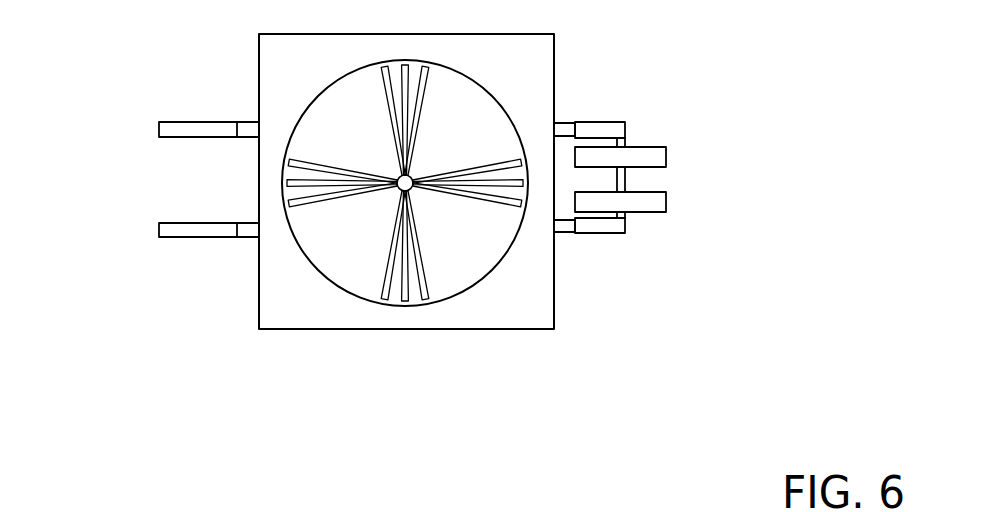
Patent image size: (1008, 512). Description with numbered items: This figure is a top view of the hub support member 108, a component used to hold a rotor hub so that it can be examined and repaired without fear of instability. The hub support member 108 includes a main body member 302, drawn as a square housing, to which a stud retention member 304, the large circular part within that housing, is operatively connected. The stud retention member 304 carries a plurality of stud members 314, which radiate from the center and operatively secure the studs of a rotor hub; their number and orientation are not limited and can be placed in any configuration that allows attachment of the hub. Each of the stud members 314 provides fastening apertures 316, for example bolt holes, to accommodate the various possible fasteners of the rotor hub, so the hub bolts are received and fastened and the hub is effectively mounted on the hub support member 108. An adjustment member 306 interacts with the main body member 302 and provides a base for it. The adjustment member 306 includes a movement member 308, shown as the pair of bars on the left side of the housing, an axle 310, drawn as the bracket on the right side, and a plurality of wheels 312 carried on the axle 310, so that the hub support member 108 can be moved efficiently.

The hub support member 108 is at (108, 59).
The main body member 302 is at (345, 330).
The stud retention member 304 is at (468, 298).
The adjustment member 306 is at (681, 304).
The movement member 308 is at (178, 238).
The axle 310 is at (628, 140).
The wheel 312 is at (666, 152).
The stud member 314 is at (385, 301).
The fastening aperture 316 is at (404, 302).